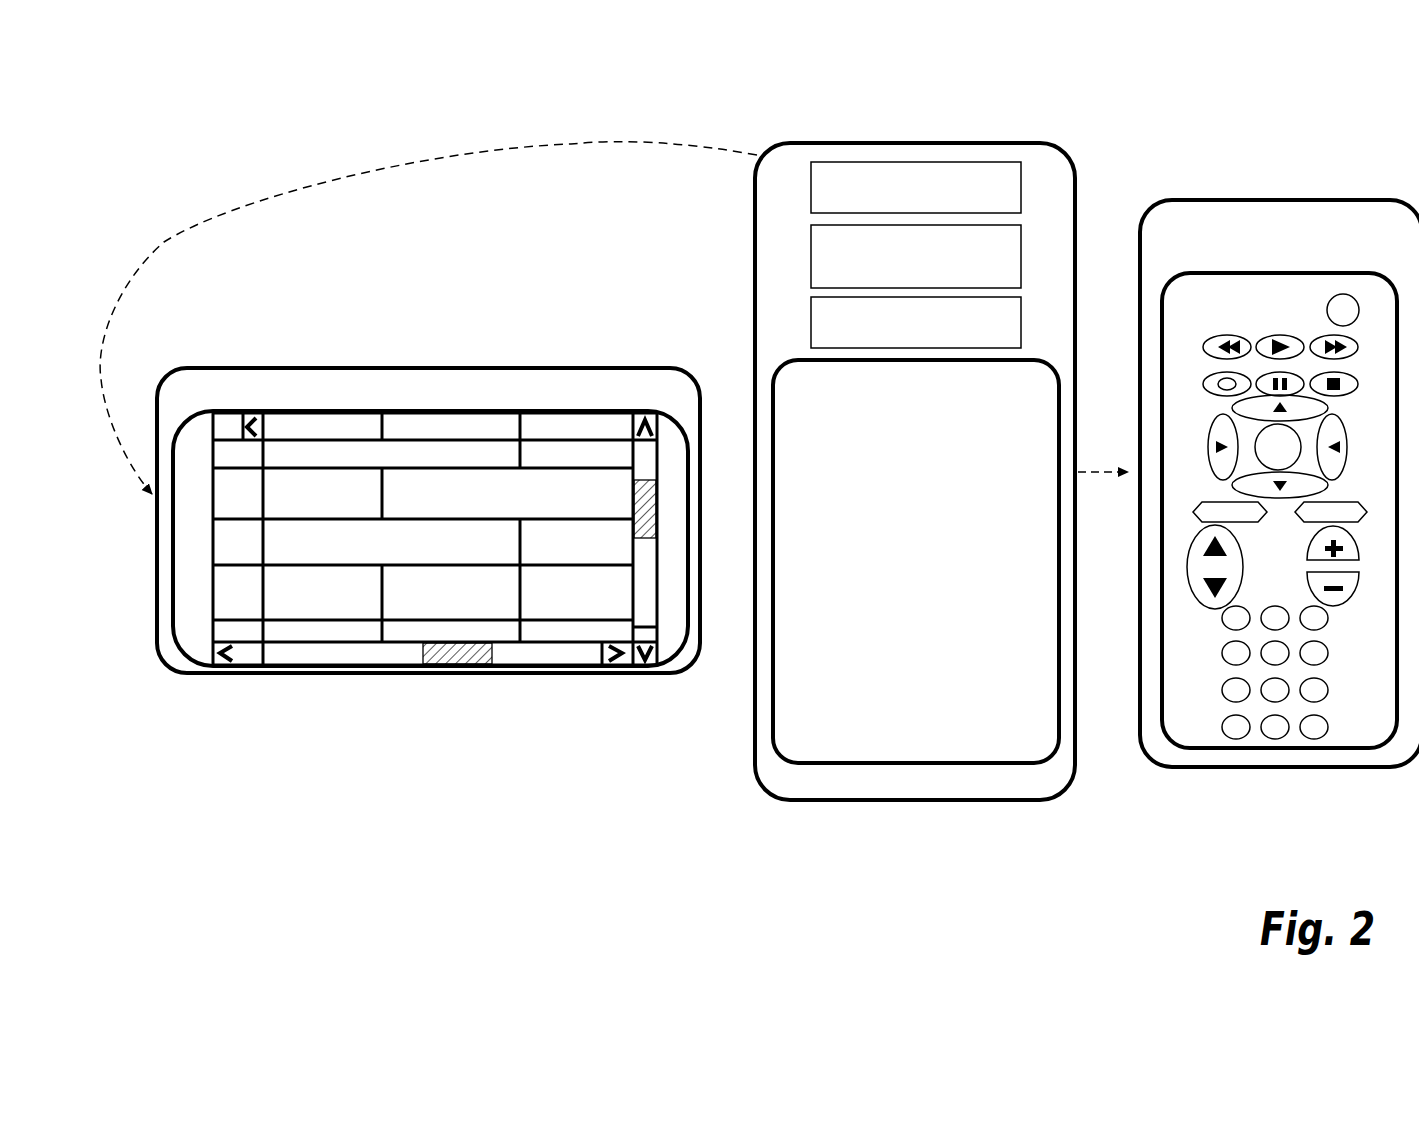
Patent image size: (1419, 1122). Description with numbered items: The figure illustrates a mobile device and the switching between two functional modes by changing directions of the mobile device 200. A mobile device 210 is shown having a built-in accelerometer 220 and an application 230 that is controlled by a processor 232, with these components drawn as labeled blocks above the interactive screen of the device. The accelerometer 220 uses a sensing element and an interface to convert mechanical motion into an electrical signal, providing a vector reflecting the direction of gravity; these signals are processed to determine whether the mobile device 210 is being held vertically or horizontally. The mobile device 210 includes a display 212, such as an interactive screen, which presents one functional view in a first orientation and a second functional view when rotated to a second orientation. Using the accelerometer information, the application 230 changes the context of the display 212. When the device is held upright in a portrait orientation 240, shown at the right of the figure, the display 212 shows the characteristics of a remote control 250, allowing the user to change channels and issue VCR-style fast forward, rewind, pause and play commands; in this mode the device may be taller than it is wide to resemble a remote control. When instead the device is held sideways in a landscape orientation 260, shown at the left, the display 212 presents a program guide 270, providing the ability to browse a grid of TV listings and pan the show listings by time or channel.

The switching between two functional modes 200 is at (512, 104).
The mobile device 210 is at (1007, 782).
The display 212 is at (775, 735).
The accelerometer 220 is at (1021, 187).
The application 230 is at (1021, 259).
The processor 232 is at (1021, 320).
The portrait orientation 240 is at (1195, 808).
The remote control 250 is at (1193, 310).
The landscape orientation 260 is at (387, 712).
The program guide 270 is at (703, 372).